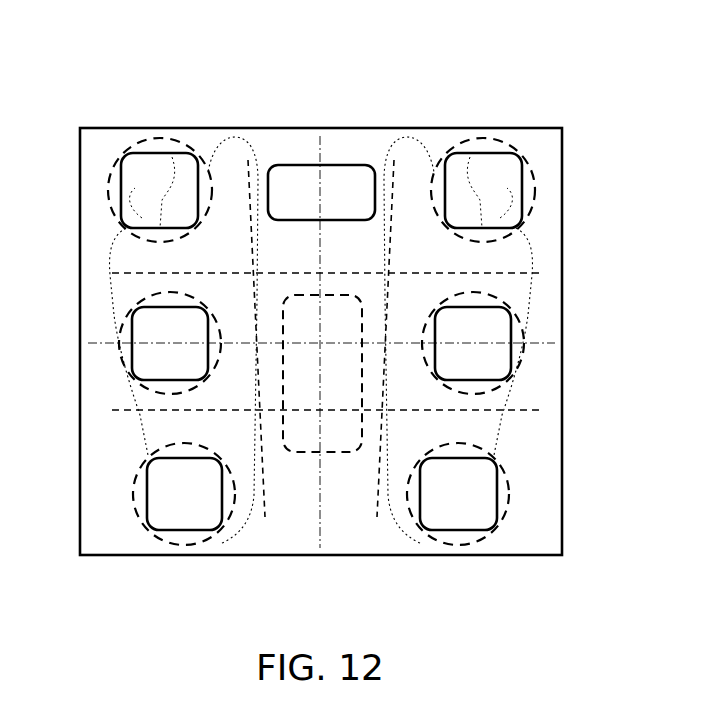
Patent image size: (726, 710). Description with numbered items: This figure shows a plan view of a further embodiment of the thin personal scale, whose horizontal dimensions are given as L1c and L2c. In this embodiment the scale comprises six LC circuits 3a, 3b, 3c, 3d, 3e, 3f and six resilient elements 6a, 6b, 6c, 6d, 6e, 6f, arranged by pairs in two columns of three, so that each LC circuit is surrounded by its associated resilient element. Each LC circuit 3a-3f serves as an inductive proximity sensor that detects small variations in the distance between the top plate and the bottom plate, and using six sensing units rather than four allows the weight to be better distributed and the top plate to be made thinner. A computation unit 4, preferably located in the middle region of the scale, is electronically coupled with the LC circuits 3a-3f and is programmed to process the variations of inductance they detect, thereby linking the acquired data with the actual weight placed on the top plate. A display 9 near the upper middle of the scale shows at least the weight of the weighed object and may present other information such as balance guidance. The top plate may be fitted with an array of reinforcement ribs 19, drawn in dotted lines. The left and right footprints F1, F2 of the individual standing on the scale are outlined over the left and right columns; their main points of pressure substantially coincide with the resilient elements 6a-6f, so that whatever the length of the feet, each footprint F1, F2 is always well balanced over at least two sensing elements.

The LC circuit 3a is at (148, 157).
The LC circuit 3b is at (130, 360).
The LC circuit 3c is at (178, 531).
The LC circuit 3d is at (490, 156).
The LC circuit 3e is at (512, 358).
The LC circuit 3f is at (462, 531).
The resilient element 6a is at (172, 156).
The resilient element 6b is at (118, 320).
The resilient element 6c is at (203, 543).
The resilient element 6d is at (468, 138).
The resilient element 6e is at (522, 319).
The resilient element 6f is at (440, 543).
The display 9 is at (321, 192).
The computation unit 4 is at (300, 452).
The reinforcement ribs 19 is at (322, 412).
The left footprint F1 is at (108, 243).
The right footprint F2 is at (533, 243).
The horizontal dimension L1c is at (80, 128).
The horizontal dimension L2c is at (562, 128).